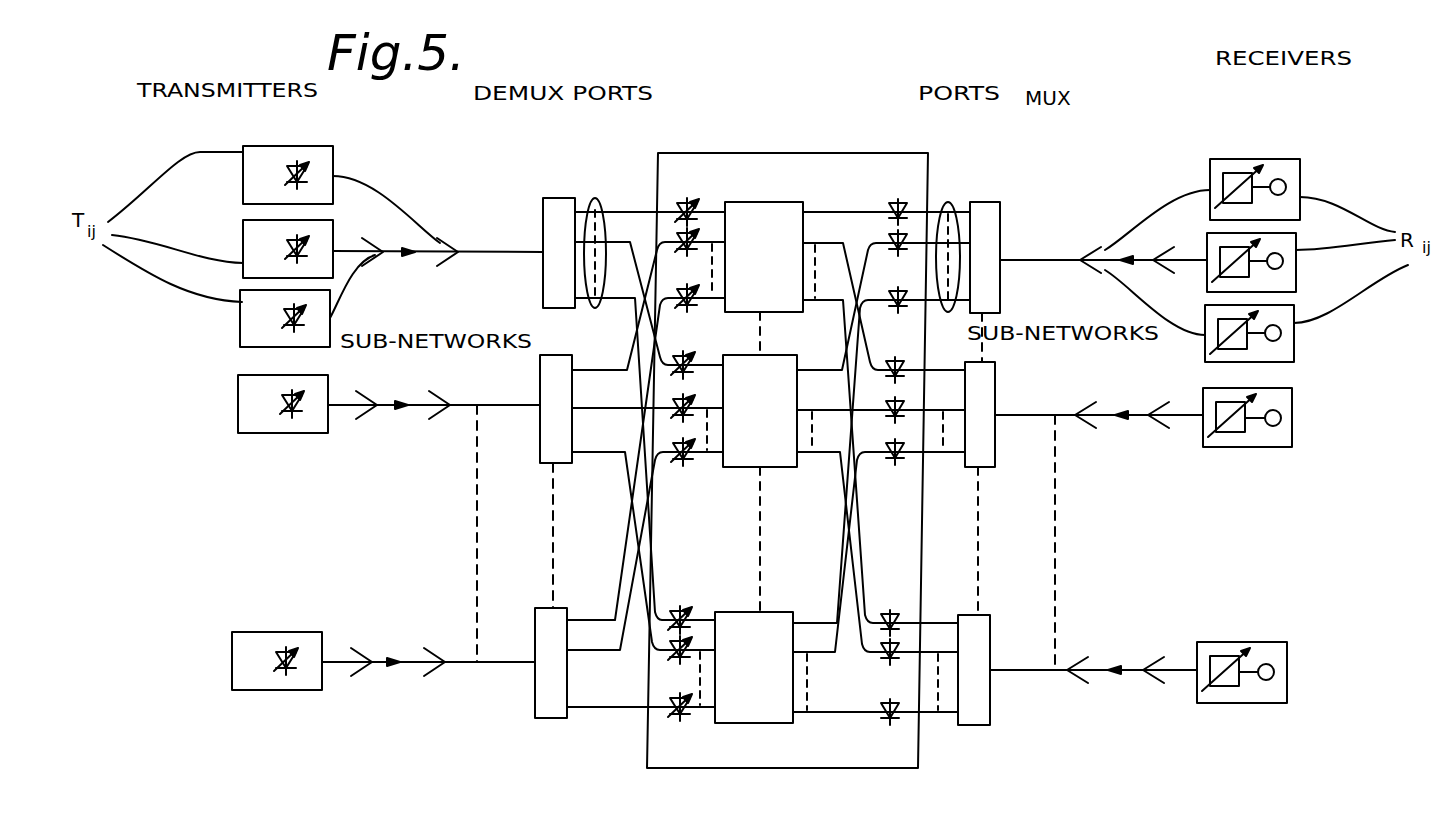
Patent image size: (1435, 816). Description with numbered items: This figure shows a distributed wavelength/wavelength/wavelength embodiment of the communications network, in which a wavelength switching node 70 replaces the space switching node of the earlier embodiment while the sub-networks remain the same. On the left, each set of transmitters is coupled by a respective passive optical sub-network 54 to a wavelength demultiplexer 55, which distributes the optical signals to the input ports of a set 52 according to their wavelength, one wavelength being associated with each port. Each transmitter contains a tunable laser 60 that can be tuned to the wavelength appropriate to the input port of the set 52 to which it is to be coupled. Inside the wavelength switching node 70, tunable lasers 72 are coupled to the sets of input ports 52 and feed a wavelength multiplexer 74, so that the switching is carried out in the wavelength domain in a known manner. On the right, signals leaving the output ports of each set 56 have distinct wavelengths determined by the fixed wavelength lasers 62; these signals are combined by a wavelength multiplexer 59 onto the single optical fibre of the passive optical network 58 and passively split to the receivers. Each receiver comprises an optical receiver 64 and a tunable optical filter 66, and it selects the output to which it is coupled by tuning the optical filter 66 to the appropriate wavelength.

The tunable laser 60 is at (283, 172).
The passive optical sub-network 54 is at (477, 252).
The wavelength demultiplexer 55 is at (543, 198).
The set of input ports 52 is at (596, 198).
The tunable lasers 72 is at (680, 225).
The wavelength multiplexer 74 is at (758, 212).
The wavelength switching node 70 is at (779, 140).
The set of output ports 56 is at (945, 205).
The wavelength multiplexer 59 is at (1000, 205).
The passive optical network 58 is at (1042, 258).
The fixed wavelength lasers 62 is at (908, 305).
The tunable optical filter 66 is at (1232, 173).
The optical receiver 64 is at (1279, 179).